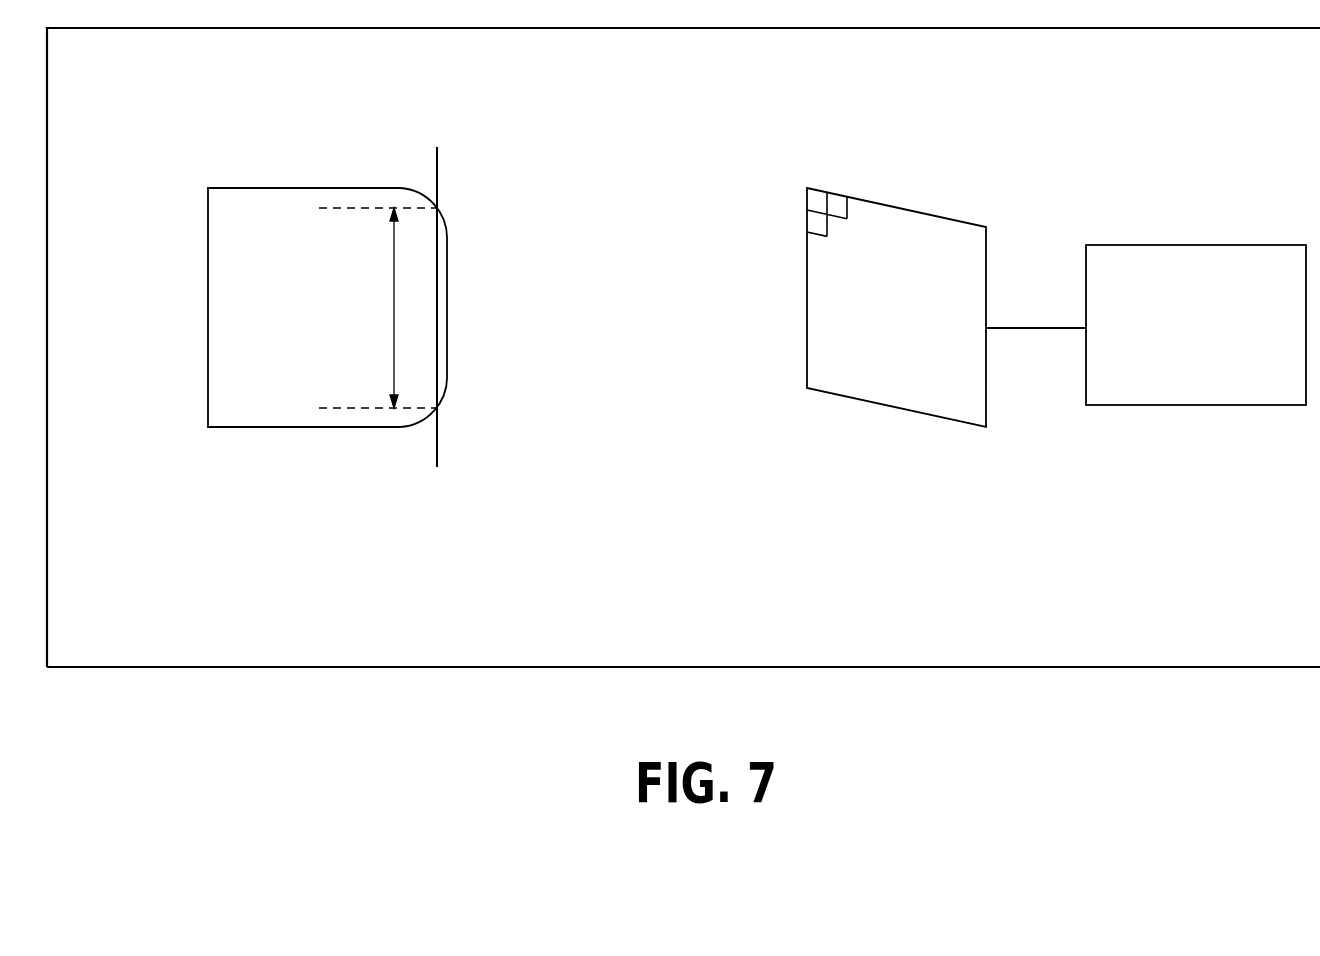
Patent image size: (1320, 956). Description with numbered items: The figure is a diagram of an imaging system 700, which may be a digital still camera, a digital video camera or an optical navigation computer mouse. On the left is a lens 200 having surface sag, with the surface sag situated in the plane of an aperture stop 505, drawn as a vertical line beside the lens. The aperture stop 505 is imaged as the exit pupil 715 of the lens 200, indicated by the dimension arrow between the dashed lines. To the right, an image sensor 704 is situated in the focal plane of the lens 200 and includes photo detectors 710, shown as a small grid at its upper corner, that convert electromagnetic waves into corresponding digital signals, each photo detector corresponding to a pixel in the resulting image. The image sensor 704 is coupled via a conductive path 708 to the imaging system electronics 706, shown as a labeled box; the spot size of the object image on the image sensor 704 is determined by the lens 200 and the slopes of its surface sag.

The imaging system 700 is at (112, 60).
The lens 200 is at (314, 188).
The aperture stop 505 is at (437, 172).
The exit pupil 715 is at (394, 272).
The image sensor 704 is at (890, 207).
The photo detectors 710 is at (811, 197).
The conductive path 708 is at (1045, 328).
The imaging system electronics 706 is at (1153, 394).